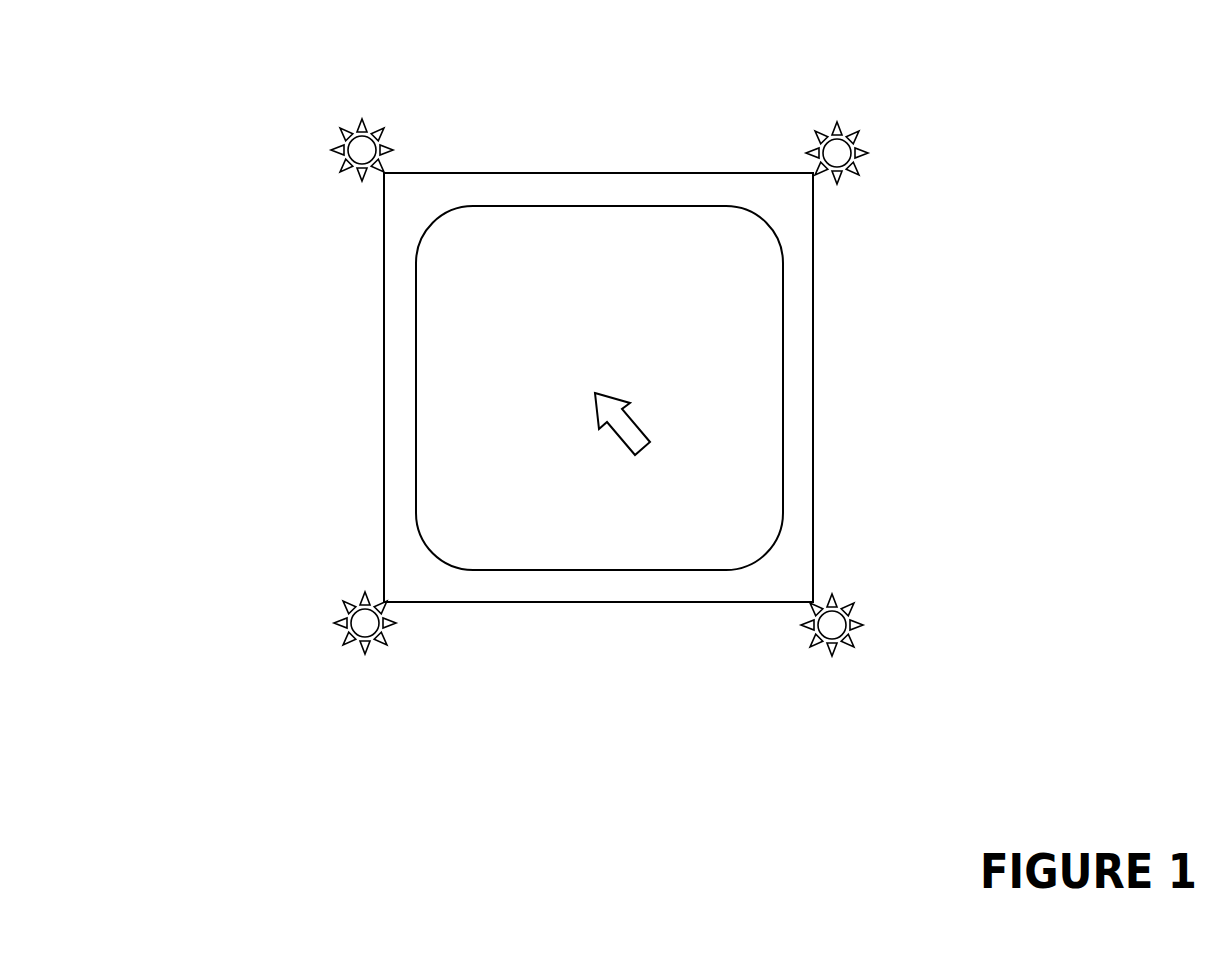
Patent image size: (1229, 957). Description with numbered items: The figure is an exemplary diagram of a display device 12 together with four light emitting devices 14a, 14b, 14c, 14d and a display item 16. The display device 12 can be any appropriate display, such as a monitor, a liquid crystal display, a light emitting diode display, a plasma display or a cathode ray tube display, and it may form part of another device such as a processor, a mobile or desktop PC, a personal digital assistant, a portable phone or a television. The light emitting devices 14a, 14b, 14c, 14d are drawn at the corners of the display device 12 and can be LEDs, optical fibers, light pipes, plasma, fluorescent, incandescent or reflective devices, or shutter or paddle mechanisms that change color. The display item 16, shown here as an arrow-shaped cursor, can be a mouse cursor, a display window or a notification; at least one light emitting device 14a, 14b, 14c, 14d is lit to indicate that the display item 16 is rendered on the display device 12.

The display device 12 is at (586, 143).
The light emitting device 14a is at (309, 124).
The light emitting device 14b is at (306, 623).
The light emitting device 14c is at (877, 141).
The light emitting device 14d is at (880, 620).
The display item 16 is at (617, 440).